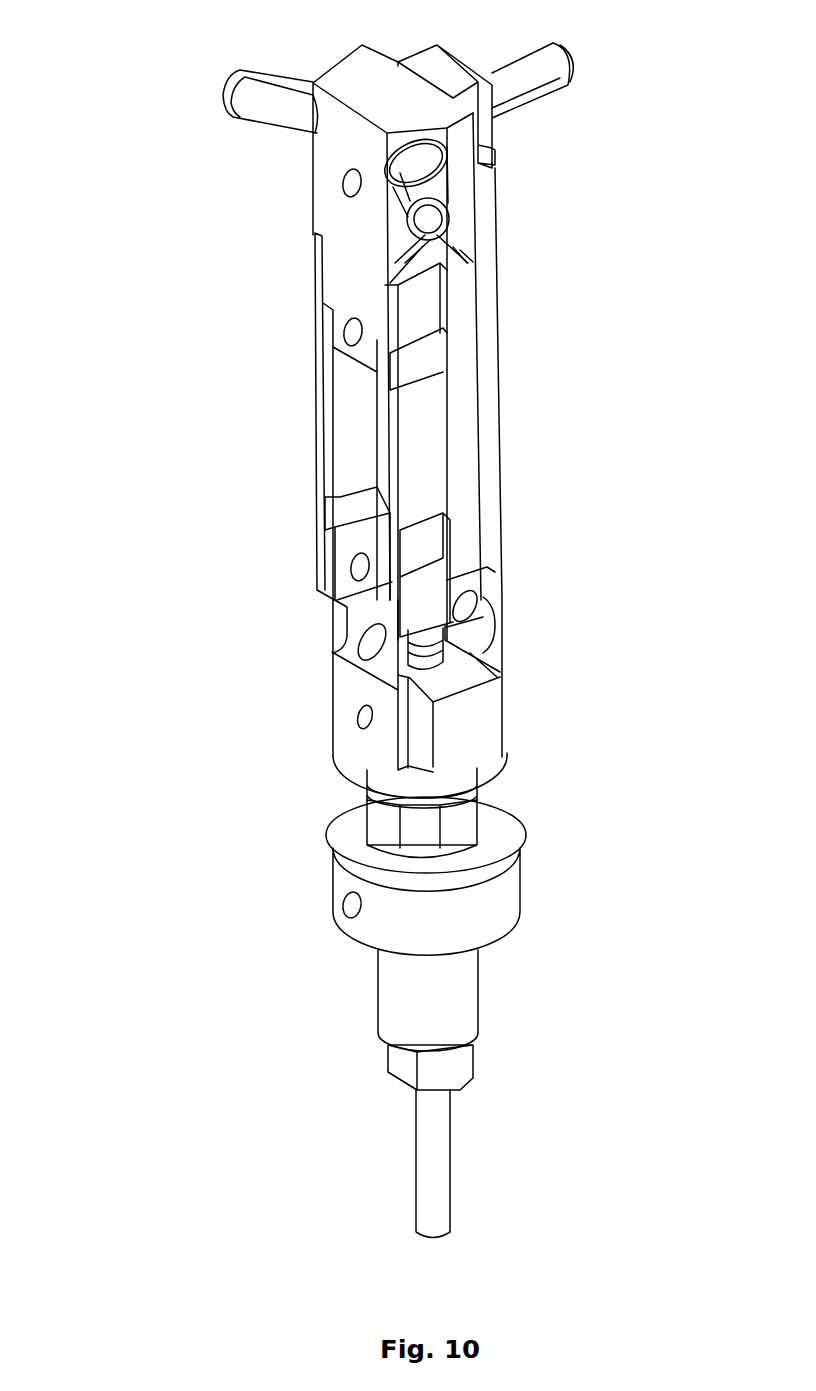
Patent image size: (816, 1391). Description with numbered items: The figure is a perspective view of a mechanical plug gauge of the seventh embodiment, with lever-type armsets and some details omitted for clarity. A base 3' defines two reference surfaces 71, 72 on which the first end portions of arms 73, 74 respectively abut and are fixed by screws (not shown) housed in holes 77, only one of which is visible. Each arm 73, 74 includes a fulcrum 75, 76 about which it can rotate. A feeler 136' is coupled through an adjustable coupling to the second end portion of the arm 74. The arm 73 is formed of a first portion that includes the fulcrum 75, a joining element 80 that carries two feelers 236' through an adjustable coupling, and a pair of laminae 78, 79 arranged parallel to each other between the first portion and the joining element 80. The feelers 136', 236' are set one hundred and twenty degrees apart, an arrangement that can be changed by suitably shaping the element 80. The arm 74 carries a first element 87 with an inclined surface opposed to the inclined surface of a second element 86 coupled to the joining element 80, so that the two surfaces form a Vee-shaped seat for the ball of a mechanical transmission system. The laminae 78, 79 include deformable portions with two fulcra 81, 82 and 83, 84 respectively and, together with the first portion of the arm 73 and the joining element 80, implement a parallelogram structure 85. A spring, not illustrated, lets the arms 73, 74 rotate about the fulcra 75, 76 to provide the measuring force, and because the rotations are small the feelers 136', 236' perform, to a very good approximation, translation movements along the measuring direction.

The base 3' is at (477, 919).
The reference surface 71 is at (345, 735).
The reference surface 72 is at (503, 707).
The arm 73 is at (390, 748).
The arm 74 is at (487, 480).
The fulcrum 75 is at (343, 645).
The fulcrum 76 is at (498, 605).
The hole 77 is at (363, 707).
The lamina 78 is at (338, 380).
The lamina 79 is at (423, 413).
The joining element 80 is at (323, 178).
The fulcrum 81 is at (325, 495).
The fulcrum 82 is at (323, 330).
The fulcrum 83 is at (423, 362).
The fulcrum 84 is at (423, 548).
The parallelogram structure 85 is at (270, 432).
The second element 86 is at (432, 238).
The first element 87 is at (455, 245).
The feeler 136' is at (574, 98).
The feeler 236' is at (373, 123).